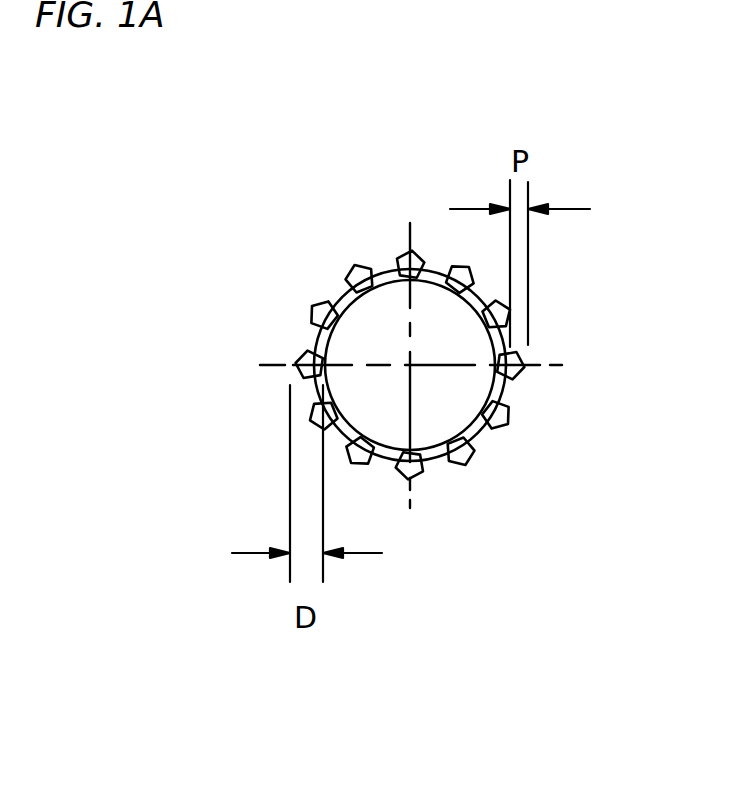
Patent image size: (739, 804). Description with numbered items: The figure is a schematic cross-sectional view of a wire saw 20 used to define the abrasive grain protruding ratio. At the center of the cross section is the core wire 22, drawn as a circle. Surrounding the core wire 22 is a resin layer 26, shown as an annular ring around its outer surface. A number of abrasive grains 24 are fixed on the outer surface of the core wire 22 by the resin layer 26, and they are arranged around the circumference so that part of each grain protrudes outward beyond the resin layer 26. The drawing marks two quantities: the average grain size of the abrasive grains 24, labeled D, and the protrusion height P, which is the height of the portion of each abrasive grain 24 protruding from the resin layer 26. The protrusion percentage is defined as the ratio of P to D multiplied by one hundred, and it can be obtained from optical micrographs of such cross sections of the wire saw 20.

The wire saw 20 is at (267, 328).
The core wire 22 is at (462, 343).
The abrasive grains 24 is at (522, 373).
The resin layer 26 is at (480, 435).